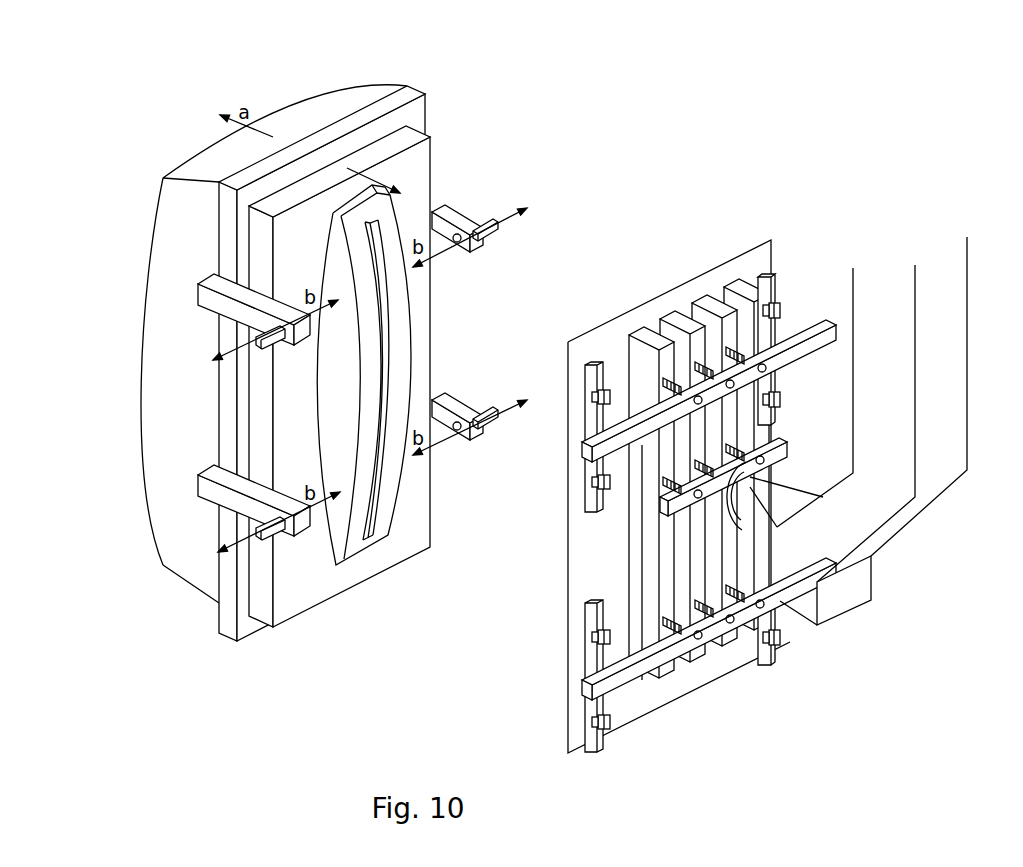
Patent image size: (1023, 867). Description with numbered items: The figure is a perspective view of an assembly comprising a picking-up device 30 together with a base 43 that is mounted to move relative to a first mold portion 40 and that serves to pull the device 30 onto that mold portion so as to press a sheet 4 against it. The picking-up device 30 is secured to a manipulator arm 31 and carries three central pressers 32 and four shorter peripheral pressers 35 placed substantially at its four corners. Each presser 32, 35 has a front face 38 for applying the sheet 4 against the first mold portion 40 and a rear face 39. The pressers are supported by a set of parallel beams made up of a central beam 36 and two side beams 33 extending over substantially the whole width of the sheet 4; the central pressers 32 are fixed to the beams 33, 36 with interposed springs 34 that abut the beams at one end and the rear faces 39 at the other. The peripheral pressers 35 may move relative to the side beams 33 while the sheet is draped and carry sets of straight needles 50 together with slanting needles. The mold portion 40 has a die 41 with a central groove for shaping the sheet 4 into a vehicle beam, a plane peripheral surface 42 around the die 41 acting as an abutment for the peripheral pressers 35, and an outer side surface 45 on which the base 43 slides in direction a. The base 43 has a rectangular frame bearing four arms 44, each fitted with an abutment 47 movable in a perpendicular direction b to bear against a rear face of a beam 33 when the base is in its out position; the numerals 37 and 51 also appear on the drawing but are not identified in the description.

The sheet 4 is at (673, 693).
The picking-up device 30 is at (763, 475).
The manipulator arm 31 is at (807, 600).
The central pressers 32 is at (643, 353).
The side beams 33 is at (824, 335).
The springs 34 is at (708, 314).
The peripheral pressers 35 is at (770, 287).
The central beam 36 is at (640, 575).
The support column 37 is at (795, 498).
The front face 38 is at (645, 590).
The rear face 39 is at (752, 440).
The first mold portion 40 is at (158, 480).
The die 41 is at (391, 219).
The plane peripheral surface 42 is at (283, 615).
The base 43 is at (344, 143).
The arms 44 is at (216, 284).
The outer side surface 45 is at (153, 448).
The abutment 47 is at (265, 346).
The straight needles 50 is at (777, 322).
The nut 51 is at (612, 392).